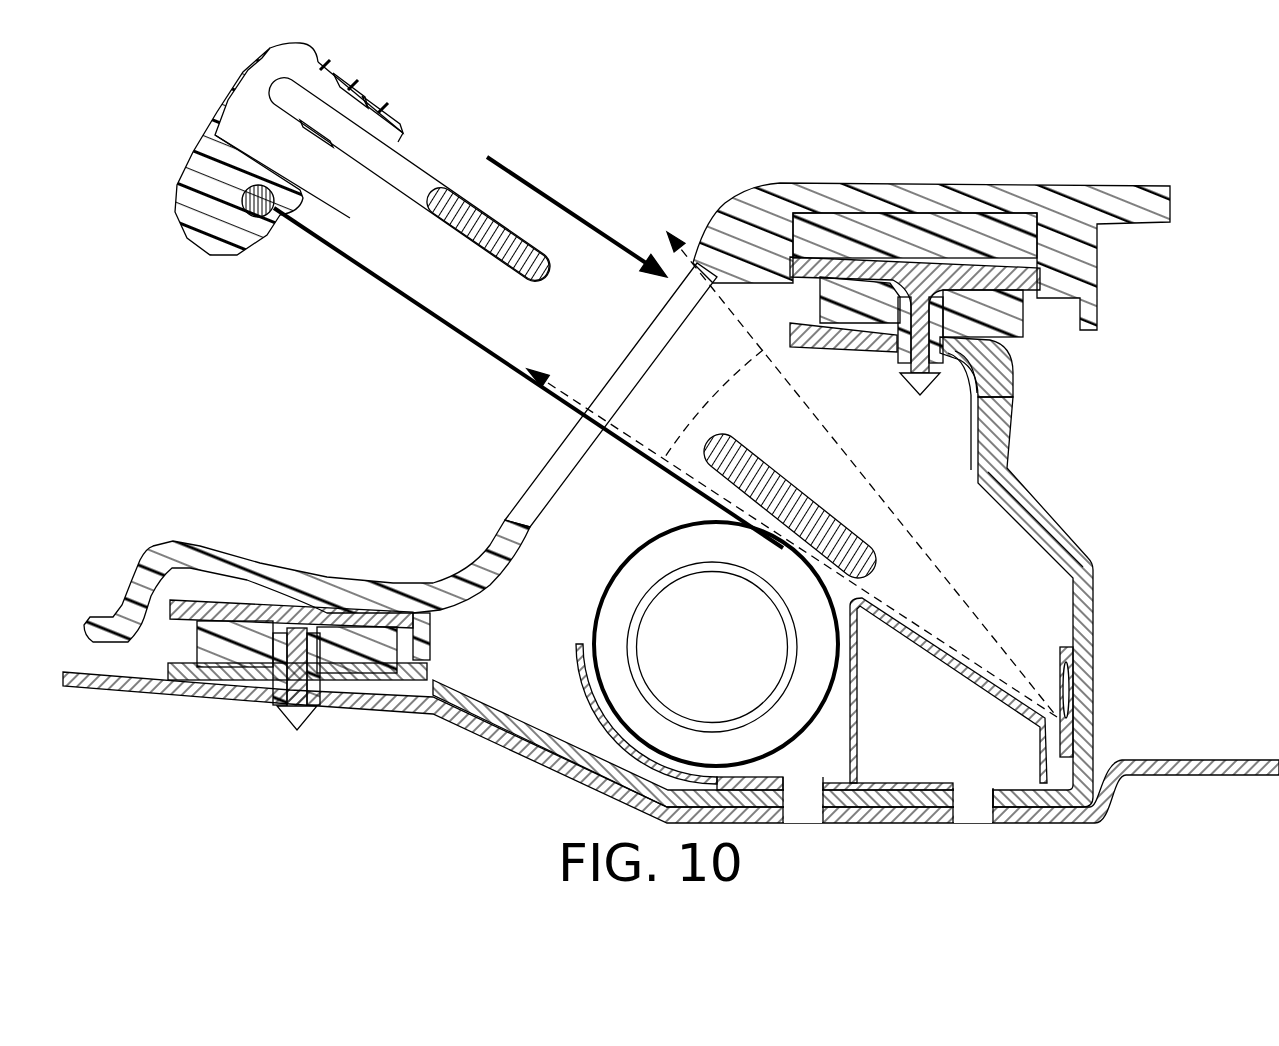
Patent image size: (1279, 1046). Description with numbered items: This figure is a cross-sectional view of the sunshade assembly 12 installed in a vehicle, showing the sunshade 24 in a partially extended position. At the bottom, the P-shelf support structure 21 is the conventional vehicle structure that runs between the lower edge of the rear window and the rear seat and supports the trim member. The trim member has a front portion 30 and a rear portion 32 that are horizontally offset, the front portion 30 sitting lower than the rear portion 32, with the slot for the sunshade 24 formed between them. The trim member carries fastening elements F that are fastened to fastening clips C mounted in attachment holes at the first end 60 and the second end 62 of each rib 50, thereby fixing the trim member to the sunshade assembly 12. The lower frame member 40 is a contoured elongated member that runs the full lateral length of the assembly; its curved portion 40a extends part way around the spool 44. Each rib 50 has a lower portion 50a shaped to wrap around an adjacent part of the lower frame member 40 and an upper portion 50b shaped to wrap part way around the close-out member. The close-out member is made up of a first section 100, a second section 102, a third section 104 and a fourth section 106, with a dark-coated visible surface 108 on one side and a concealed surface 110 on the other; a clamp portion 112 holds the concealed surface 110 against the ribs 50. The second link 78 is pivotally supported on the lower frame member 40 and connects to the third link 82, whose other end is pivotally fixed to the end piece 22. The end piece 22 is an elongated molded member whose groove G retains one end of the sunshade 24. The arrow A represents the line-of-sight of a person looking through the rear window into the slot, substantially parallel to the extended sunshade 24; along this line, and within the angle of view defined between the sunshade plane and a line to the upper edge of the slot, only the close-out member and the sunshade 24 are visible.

The sunshade assembly 12 is at (630, 102).
The end piece 22 is at (205, 163).
The third link 82 is at (468, 237).
The groove G is at (275, 222).
The sunshade 24 is at (518, 365).
The arrow (line-of-sight) A is at (572, 212).
The rear portion 32 is at (835, 200).
The fastening clip C is at (1003, 318).
The fastening element F is at (919, 388).
The front portion 30 is at (188, 550).
The second end 62 is at (197, 681).
The P-shelf support structure 21 is at (470, 738).
The rib 50 is at (1083, 725).
The lower portion 50a is at (477, 698).
The upper portion 50b is at (1053, 522).
The first end 60 is at (815, 330).
The first section 100 is at (837, 352).
The concealed surface 110 is at (1000, 393).
The second section 102 is at (970, 412).
The third section 104 is at (987, 492).
The visible surface 108 is at (1007, 510).
The fourth section 106 is at (1072, 645).
The clamp portion 112 is at (1070, 660).
The lower frame member 40 is at (884, 782).
The curved portion 40a is at (577, 652).
The spool 44 is at (680, 613).
The second link 78 is at (795, 498).